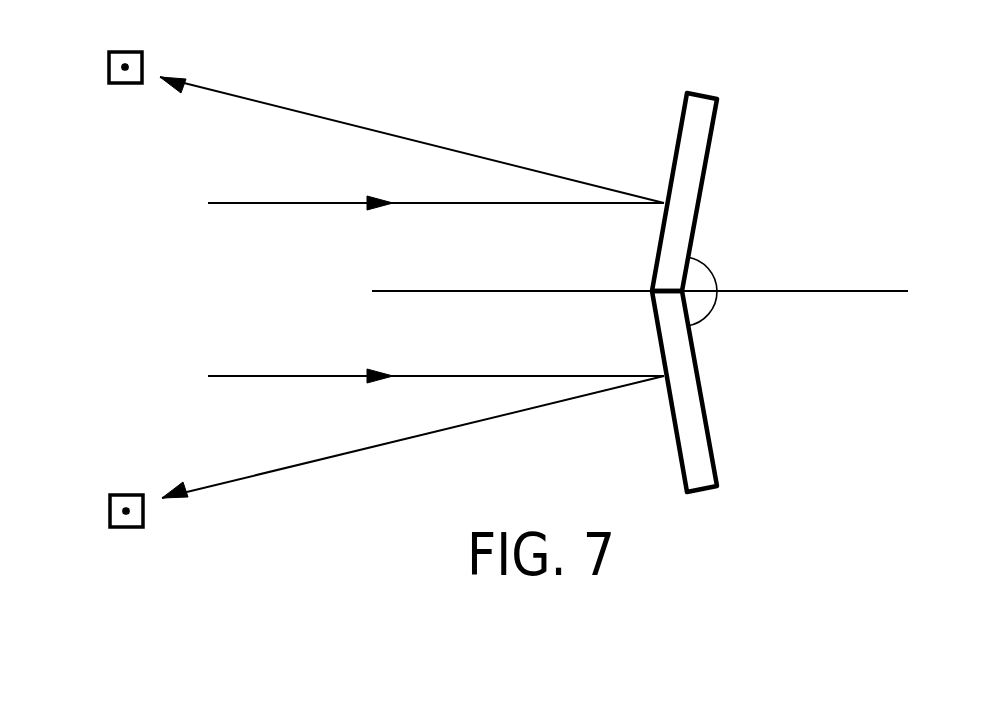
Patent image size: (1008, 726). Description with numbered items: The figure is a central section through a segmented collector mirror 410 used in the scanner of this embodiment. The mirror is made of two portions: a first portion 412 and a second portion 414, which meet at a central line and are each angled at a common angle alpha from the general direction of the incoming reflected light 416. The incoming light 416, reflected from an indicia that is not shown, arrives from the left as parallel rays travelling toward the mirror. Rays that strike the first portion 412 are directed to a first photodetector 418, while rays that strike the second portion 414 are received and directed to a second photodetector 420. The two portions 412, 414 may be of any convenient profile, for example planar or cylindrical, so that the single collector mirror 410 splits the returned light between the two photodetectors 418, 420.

The segmented collector mirror 410 is at (640, 257).
The first portion 412 is at (709, 145).
The second portion 414 is at (709, 438).
The incoming light 416 is at (298, 204).
The first photodetector 418 is at (142, 60).
The second photodetector 420 is at (128, 527).